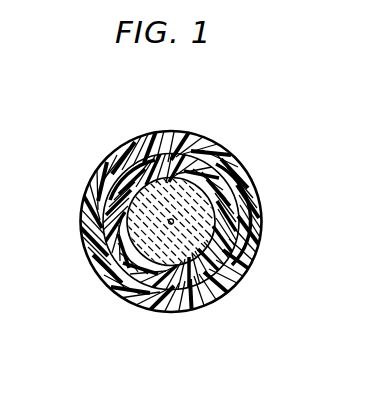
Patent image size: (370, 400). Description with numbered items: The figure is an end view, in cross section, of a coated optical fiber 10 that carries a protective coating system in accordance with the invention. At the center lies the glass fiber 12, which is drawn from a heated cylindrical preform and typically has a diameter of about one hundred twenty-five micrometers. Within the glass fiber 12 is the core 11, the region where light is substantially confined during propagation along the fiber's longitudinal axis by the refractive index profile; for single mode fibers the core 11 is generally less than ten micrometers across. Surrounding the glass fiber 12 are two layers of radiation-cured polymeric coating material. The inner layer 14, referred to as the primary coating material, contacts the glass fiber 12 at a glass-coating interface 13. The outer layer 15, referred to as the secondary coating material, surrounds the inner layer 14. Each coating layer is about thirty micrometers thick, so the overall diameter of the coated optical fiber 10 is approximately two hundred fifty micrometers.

The coated optical fiber 10 is at (83, 131).
The core 11 is at (173, 220).
The glass fiber 12 is at (226, 188).
The glass-coating interface 13 is at (218, 220).
The inner layer 14 is at (213, 262).
The outer layer 15 is at (218, 300).